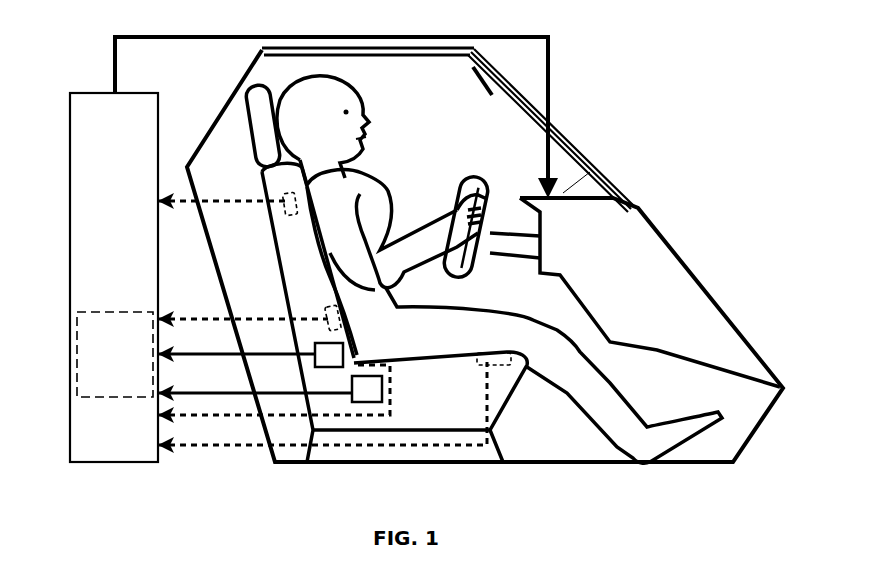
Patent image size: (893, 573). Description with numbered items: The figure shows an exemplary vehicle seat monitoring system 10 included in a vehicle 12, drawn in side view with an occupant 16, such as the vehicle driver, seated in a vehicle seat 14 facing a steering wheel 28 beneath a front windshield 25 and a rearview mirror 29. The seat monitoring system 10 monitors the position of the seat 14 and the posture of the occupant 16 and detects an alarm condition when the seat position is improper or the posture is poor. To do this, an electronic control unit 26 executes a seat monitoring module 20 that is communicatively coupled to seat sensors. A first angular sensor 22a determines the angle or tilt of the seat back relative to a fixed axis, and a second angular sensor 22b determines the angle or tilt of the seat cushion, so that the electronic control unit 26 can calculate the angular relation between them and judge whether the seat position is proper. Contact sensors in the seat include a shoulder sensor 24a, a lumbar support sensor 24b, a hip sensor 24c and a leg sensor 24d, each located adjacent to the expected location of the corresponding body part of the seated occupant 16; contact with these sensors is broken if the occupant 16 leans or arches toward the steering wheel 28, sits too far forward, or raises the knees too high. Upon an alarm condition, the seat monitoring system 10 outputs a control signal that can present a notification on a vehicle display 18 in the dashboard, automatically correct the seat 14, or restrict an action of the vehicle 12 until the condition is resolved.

The vehicle seat monitoring system 10 is at (260, 460).
The vehicle 12 is at (620, 170).
The vehicle seat 14 is at (507, 405).
The vehicle occupant 16 is at (320, 77).
The vehicle display 18 is at (558, 255).
The seat monitoring module 20 is at (77, 373).
The first angular sensor 22a is at (318, 367).
The second angular sensor 22b is at (360, 402).
The shoulder sensor 24a is at (286, 192).
The lumbar support sensor 24b is at (325, 305).
The hip sensor 24c is at (388, 369).
The leg sensor 24d is at (478, 360).
The front windshield 25 is at (577, 147).
The electronic control unit 26 is at (70, 163).
The steering wheel 28 is at (478, 178).
The rearview mirror 29 is at (482, 73).